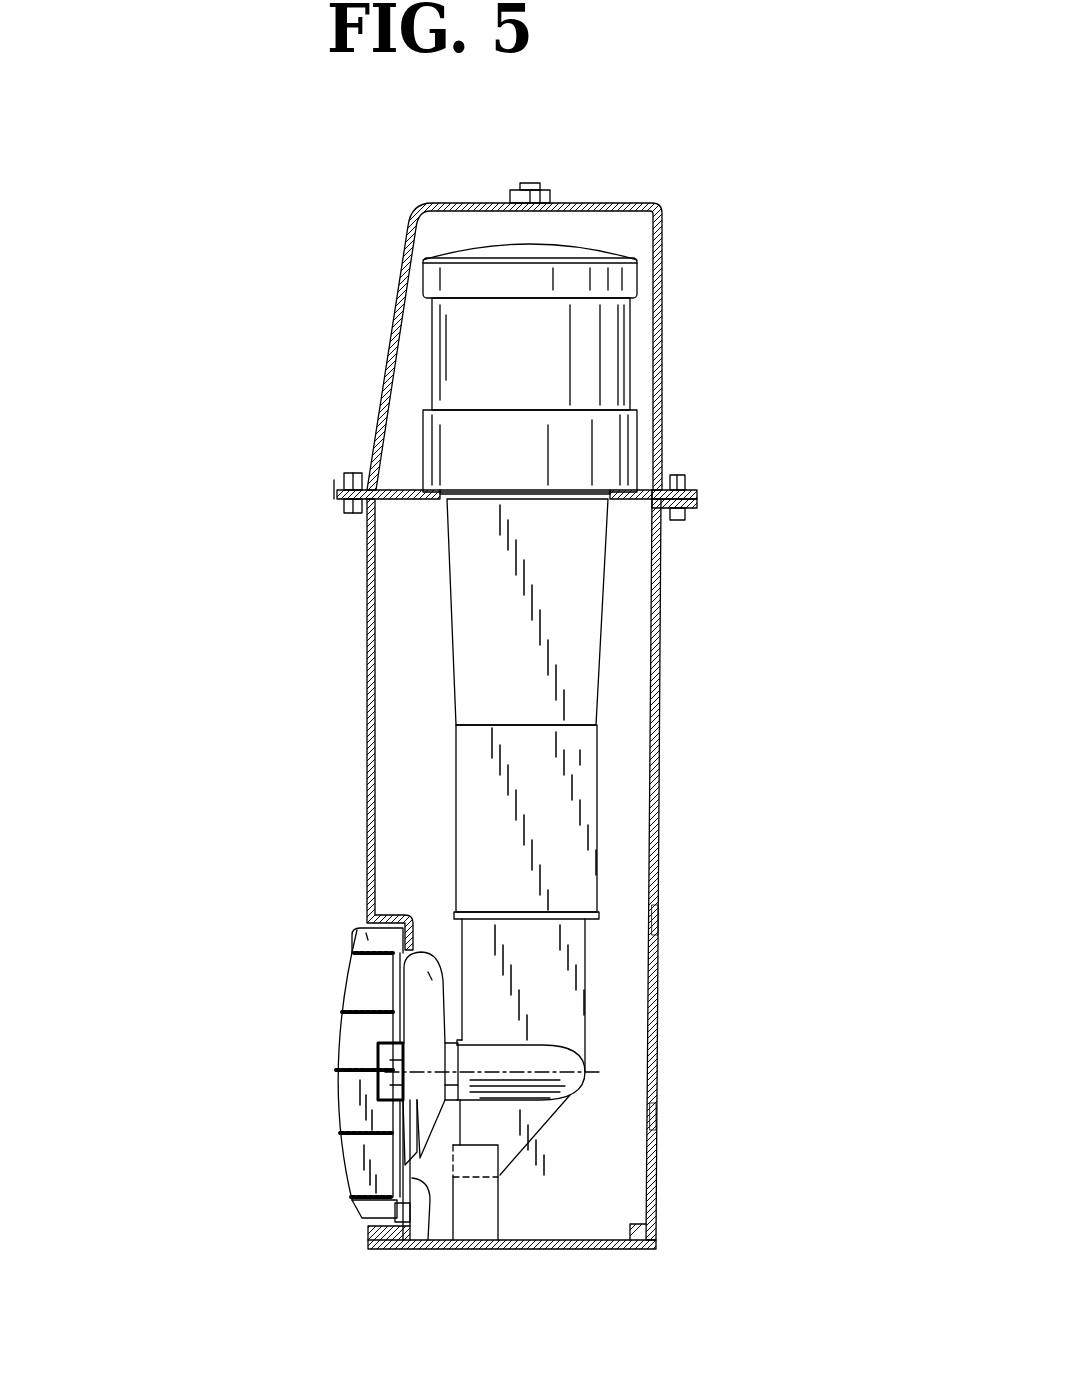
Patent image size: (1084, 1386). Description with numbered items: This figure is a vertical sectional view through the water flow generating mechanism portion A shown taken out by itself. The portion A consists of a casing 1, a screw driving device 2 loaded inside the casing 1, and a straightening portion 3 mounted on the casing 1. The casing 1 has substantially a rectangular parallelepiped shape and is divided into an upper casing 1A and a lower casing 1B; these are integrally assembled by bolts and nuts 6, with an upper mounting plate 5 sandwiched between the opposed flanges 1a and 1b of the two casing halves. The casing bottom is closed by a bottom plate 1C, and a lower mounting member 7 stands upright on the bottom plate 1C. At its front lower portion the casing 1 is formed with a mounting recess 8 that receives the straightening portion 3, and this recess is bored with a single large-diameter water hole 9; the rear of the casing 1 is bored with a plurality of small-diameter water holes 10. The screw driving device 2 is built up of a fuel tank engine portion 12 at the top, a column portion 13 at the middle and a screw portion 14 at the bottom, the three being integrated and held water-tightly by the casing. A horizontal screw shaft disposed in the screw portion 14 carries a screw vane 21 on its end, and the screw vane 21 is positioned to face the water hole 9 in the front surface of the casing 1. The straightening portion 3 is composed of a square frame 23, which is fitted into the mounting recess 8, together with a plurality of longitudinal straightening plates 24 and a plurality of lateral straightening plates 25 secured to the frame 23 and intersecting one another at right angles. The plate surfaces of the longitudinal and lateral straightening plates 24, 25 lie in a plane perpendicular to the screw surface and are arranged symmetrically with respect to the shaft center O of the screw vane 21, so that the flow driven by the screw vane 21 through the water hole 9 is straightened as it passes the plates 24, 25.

The water flow generating mechanism portion A is at (300, 357).
The casing 1 is at (400, 278).
The upper casing 1A is at (663, 378).
The lower casing 1B is at (663, 712).
The bottom plate 1C is at (530, 1250).
The flange 1a is at (697, 494).
The flange 1b is at (697, 505).
The screw driving device 2 is at (408, 630).
The straightening portion 3 is at (325, 1105).
The upper mounting plate 5 is at (397, 502).
The bolts and nuts 6 is at (347, 467).
The lower mounting member 7 is at (497, 1203).
The mounting recess 8 is at (365, 937).
The water hole 9 is at (424, 1250).
The small-diameter water holes 10 is at (660, 905).
The fuel tank engine portion 12 is at (612, 330).
The column portion 13 is at (514, 641).
The screw portion 14 is at (572, 1012).
The screw vane 21 is at (432, 955).
The square frame 23 is at (380, 1212).
The longitudinal straightening plates 24 is at (365, 972).
The lateral straightening plates 25 is at (350, 1010).
The shaft center O is at (565, 1105).